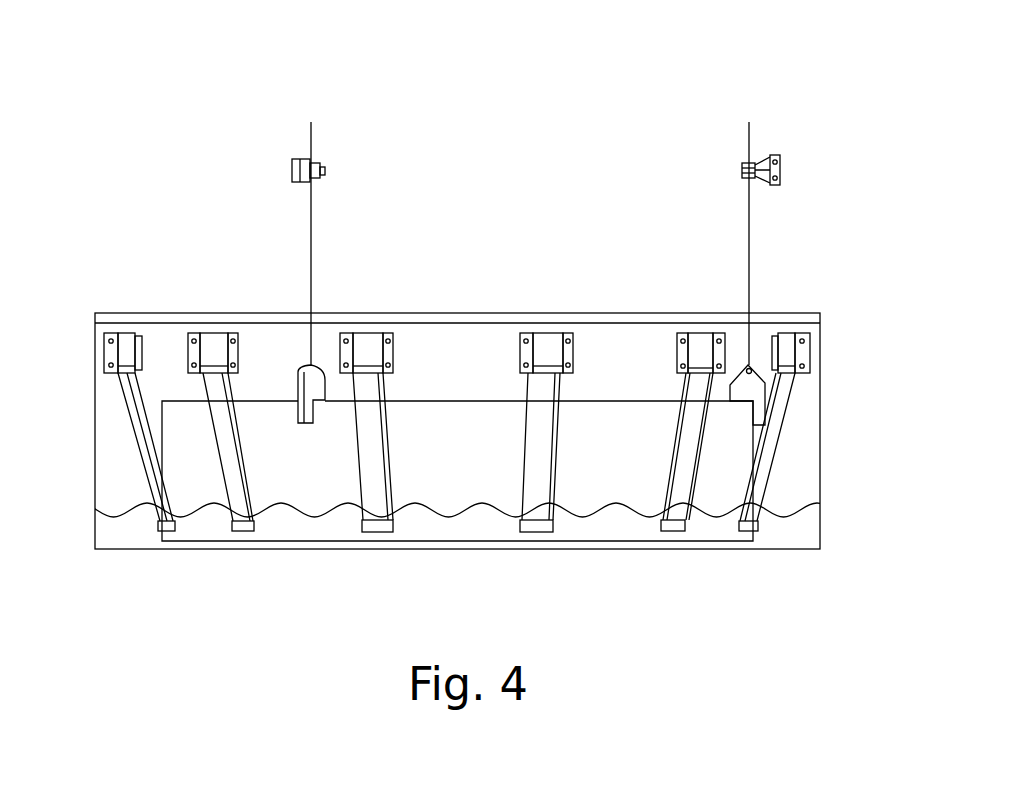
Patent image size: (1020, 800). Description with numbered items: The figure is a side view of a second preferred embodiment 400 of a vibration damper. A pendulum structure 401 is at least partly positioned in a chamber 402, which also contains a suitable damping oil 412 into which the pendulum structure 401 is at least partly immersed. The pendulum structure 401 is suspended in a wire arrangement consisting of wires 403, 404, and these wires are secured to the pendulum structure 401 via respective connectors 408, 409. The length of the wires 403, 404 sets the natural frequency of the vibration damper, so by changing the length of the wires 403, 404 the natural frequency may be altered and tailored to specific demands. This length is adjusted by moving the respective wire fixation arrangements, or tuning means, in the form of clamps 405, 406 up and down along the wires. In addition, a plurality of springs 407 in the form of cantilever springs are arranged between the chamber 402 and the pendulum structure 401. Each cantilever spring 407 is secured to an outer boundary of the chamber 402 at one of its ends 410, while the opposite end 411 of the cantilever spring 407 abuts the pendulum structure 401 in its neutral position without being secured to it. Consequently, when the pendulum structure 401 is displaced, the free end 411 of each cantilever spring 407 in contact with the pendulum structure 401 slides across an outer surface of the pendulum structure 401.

The second preferred embodiment 400 is at (666, 68).
The pendulum structure 401 is at (609, 523).
The chamber 402 is at (793, 460).
The wire 403 is at (313, 218).
The wire 404 is at (750, 255).
The clamp 405 is at (292, 163).
The clamp 406 is at (780, 168).
The cantilever spring 407 is at (370, 476).
The connector 408 is at (301, 373).
The connector 409 is at (755, 390).
The end of cantilever spring 410 is at (372, 350).
The free end of cantilever spring 411 is at (392, 528).
The damping oil 412 is at (122, 517).